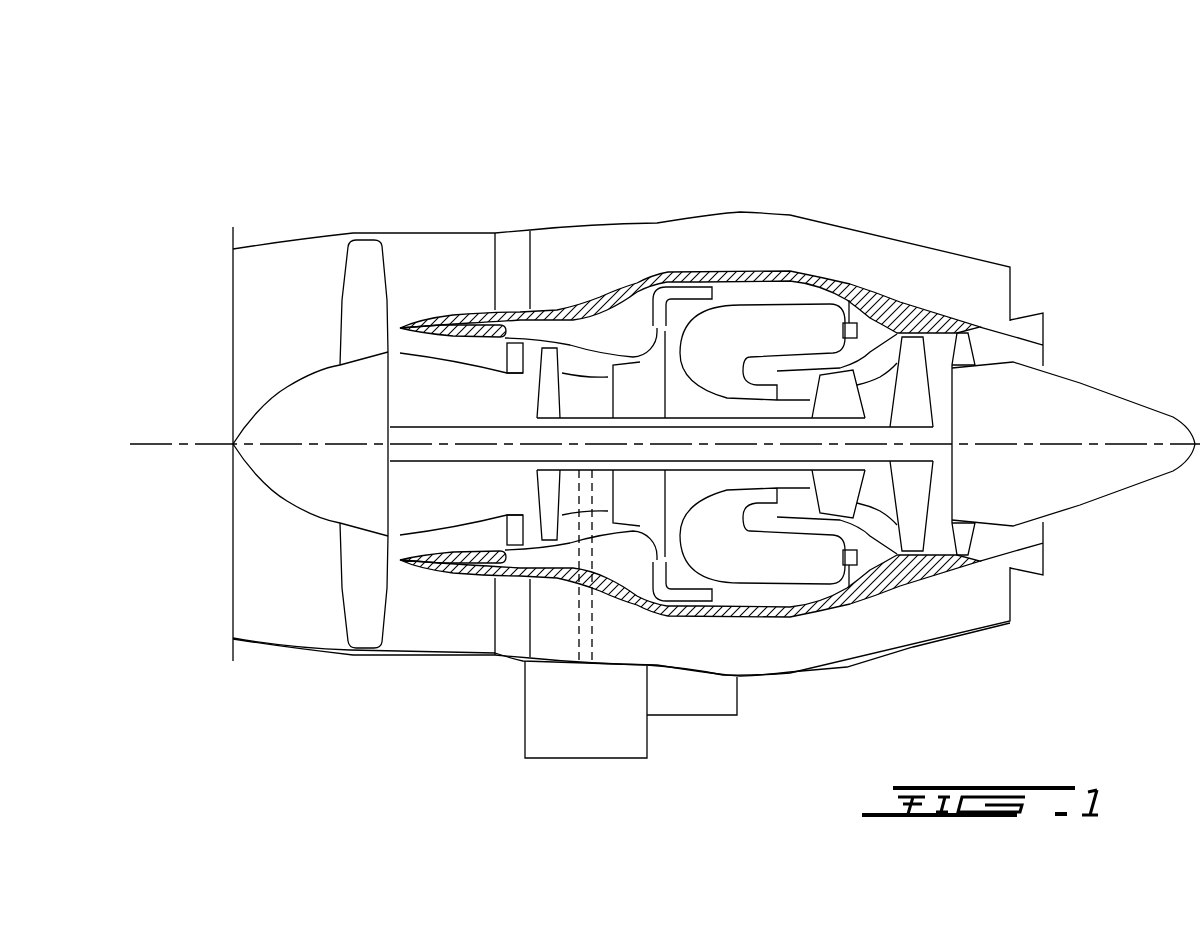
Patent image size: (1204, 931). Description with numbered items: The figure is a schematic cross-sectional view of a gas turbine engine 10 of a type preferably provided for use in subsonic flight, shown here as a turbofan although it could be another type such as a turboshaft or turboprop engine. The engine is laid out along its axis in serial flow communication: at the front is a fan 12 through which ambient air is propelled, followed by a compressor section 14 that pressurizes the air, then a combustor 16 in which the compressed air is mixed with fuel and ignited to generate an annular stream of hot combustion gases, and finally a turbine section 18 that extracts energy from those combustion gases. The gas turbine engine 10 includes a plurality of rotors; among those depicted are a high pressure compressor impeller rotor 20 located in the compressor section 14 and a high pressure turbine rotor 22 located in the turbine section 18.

The gas turbine engine 10 is at (950, 157).
The fan 12 is at (360, 575).
The compressor section 14 is at (573, 357).
The combustor 16 is at (750, 330).
The turbine section 18 is at (875, 490).
The high pressure compressor impeller rotor 20 is at (645, 383).
The high pressure turbine rotor 22 is at (840, 388).